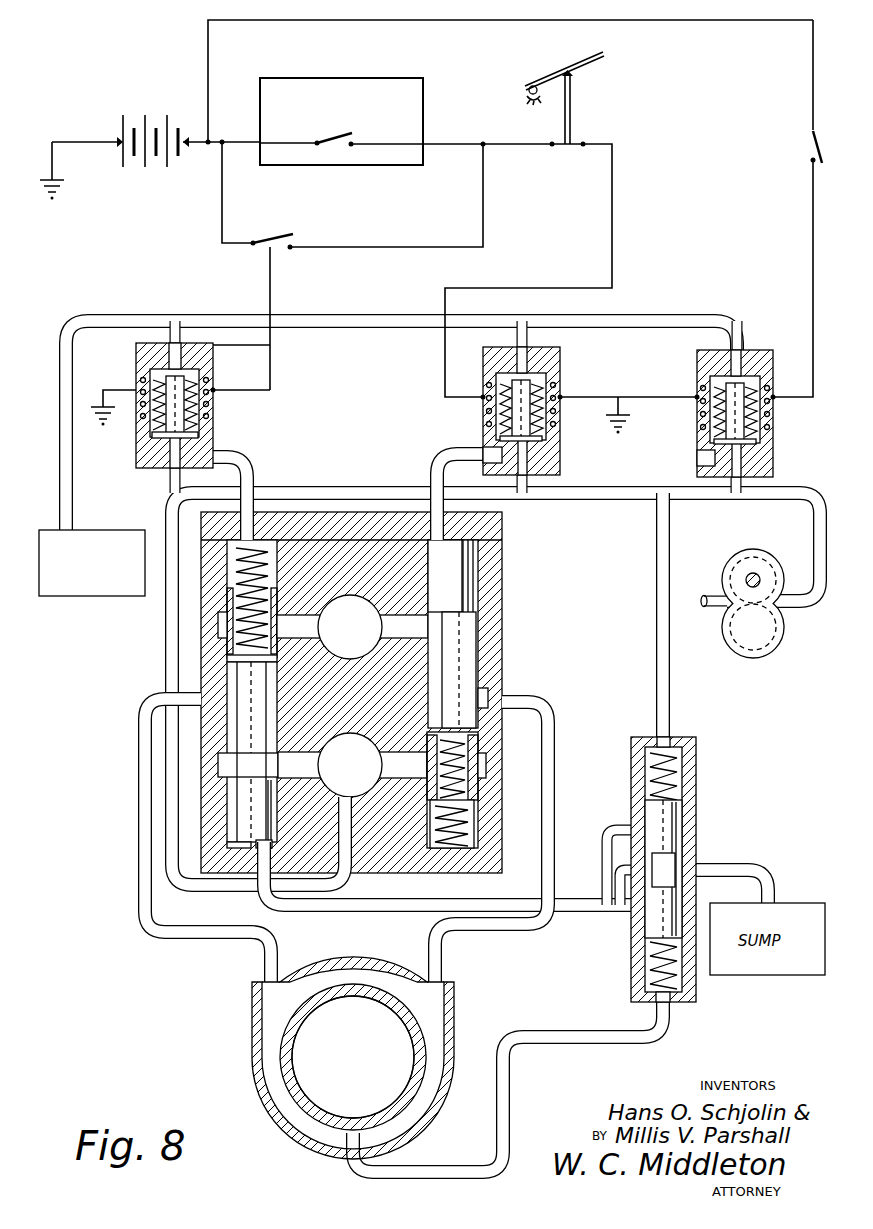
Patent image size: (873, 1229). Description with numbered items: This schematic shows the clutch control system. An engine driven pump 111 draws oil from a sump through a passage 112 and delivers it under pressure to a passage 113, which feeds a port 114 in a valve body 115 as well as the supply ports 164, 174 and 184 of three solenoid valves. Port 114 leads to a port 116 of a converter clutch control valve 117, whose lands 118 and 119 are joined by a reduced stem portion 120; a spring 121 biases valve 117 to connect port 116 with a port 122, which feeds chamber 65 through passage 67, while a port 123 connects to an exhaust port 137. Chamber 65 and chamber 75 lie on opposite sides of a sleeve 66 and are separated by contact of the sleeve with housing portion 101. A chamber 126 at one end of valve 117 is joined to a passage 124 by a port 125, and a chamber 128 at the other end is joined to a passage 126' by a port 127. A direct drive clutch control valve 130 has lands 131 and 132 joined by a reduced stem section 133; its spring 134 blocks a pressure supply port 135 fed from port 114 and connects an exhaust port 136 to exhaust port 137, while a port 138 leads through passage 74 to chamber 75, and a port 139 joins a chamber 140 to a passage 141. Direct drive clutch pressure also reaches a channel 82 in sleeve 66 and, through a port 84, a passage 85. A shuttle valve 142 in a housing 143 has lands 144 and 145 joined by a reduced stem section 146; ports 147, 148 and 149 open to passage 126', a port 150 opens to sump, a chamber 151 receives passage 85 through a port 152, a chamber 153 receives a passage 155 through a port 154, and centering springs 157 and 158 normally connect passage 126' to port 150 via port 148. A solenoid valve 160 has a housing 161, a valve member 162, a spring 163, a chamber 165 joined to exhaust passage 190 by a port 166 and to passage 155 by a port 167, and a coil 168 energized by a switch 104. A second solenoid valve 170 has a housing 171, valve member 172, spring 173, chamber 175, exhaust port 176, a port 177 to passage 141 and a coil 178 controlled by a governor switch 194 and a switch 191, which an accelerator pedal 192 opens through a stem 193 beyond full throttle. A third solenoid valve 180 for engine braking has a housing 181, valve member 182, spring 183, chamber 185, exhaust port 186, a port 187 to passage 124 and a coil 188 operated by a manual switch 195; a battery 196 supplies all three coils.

The chamber 65 is at (350, 1036).
The sleeve 66 is at (296, 1085).
The passage 67 is at (185, 928).
The passage 74 is at (505, 930).
The chamber 75 is at (442, 1038).
The channel 82 is at (346, 1150).
The port 84 is at (420, 1148).
The passage 85 is at (508, 1125).
The housing portion 101 is at (357, 960).
The switch 104 is at (811, 152).
The engine driven pump 111 is at (770, 635).
The passage 112 is at (712, 607).
The passage 113 is at (560, 500).
The port 114 is at (356, 780).
The valve body 115 is at (506, 634).
The port 116 is at (226, 766).
The converter clutch control valve 117 is at (272, 808).
The land 118 is at (272, 825).
The land 119 is at (272, 656).
The reduced stem portion 120 is at (262, 700).
The spring 121 is at (262, 552).
The port 122 is at (210, 695).
The port 123 is at (218, 624).
The passage 124 is at (252, 462).
The port 125 is at (255, 505).
The chamber 126 is at (286, 601).
The passage 126' is at (447, 890).
The port 127 is at (250, 853).
The chamber 128 is at (272, 851).
The direct drive clutch control valve 130 is at (478, 670).
The land 131 is at (476, 746).
The land 132 is at (472, 580).
The reduced stem section 133 is at (410, 660).
The spring 134 is at (470, 812).
The pressure supply port 135 is at (486, 766).
The exhaust port 136 is at (488, 690).
The exhaust port 137 is at (382, 613).
The port 138 is at (490, 704).
The port 139 is at (453, 634).
The chamber 140 is at (466, 542).
The passage 141 is at (432, 470).
The shuttle valve 142 is at (672, 854).
The housing 143 is at (685, 758).
The land 144 is at (690, 806).
The land 145 is at (680, 908).
The reduced stem section 146 is at (676, 860).
The port 147 is at (630, 826).
The port 148 is at (628, 868).
The port 149 is at (630, 912).
The port 150 is at (690, 867).
The chamber 151 is at (682, 965).
The port 152 is at (666, 1008).
The chamber 153 is at (680, 780).
The port 154 is at (668, 738).
The passage 155 is at (657, 552).
The centering spring 157 is at (645, 766).
The centering spring 158 is at (652, 960).
The solenoid valve 160 is at (747, 418).
The housing 161 is at (774, 473).
The valve member 162 is at (748, 410).
The spring 163 is at (750, 392).
The pressure supply port 164 is at (733, 490).
The chamber 165 is at (706, 412).
The port 166 is at (742, 352).
The port 167 is at (706, 456).
The solenoid coil 168 is at (760, 440).
The second solenoid valve 170 is at (531, 407).
The housing 171 is at (528, 488).
The valve member 172 is at (530, 392).
The spring 173 is at (535, 376).
The pressure supply port 174 is at (542, 454).
The chamber 175 is at (490, 406).
The port 176 is at (484, 356).
The port 177 is at (496, 452).
The solenoid coil 178 is at (562, 398).
The third solenoid valve 180 is at (175, 405).
The housing 181 is at (143, 358).
The valve member 182 is at (185, 405).
The spring 183 is at (192, 382).
The pressure supply port 184 is at (147, 482).
The chamber 185 is at (148, 390).
The port 186 is at (183, 365).
The port 187 is at (215, 448).
The solenoid coil 188 is at (150, 430).
The exhaust passage 190 is at (660, 324).
The switch 191 is at (584, 150).
The accelerator pedal 192 is at (580, 60).
The stem 193 is at (571, 108).
The governor controlled switch 194 is at (352, 136).
The manually controllable switch 195 is at (272, 236).
The battery 196 is at (150, 124).